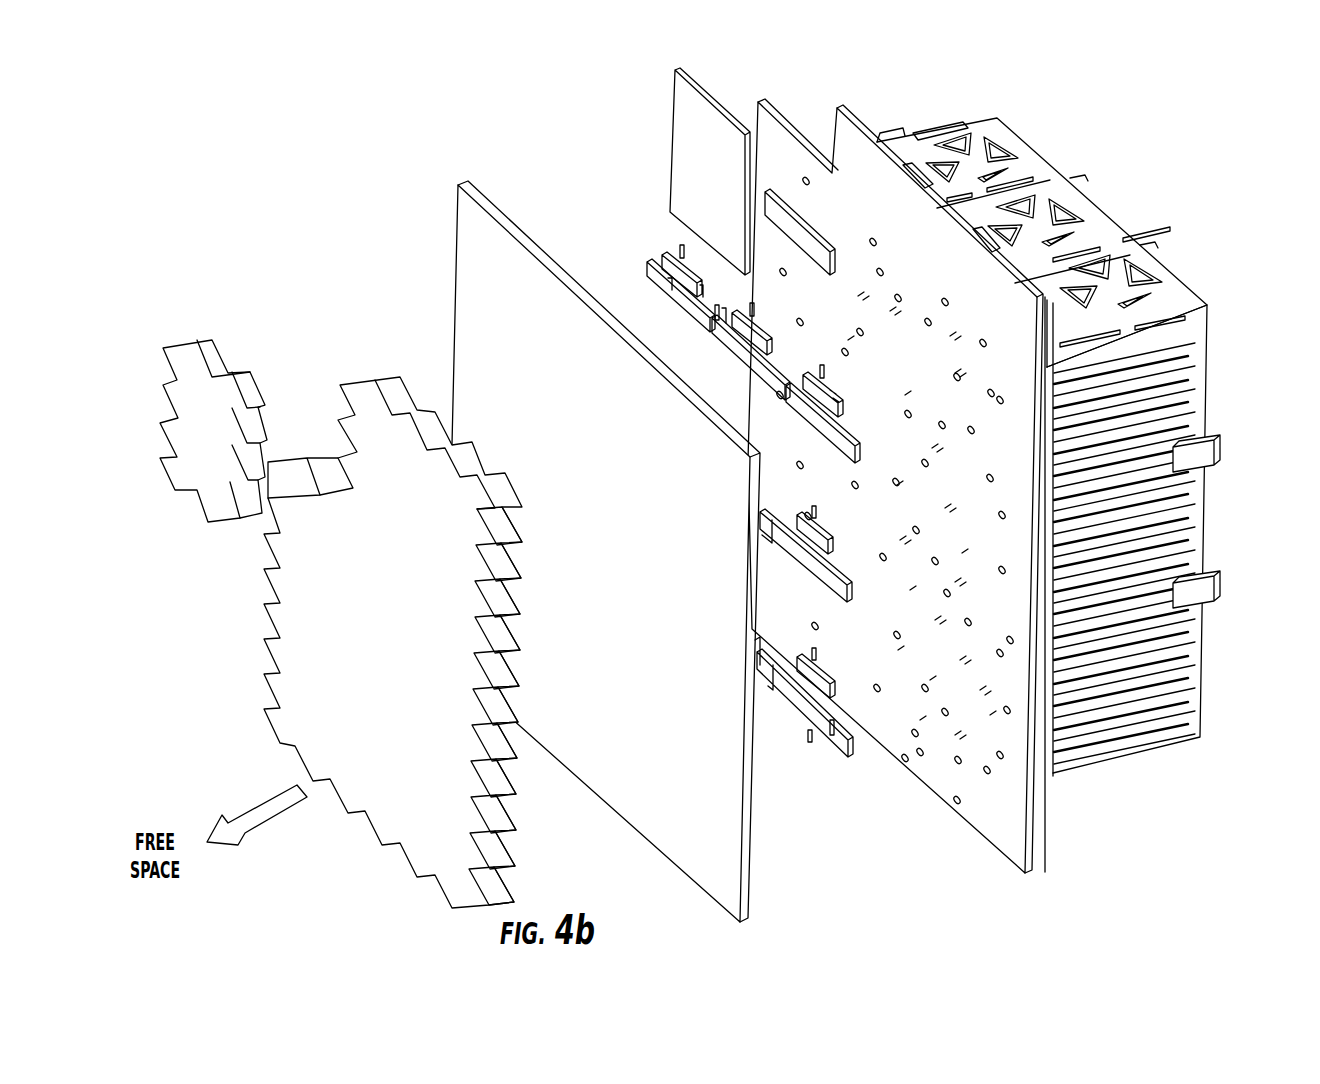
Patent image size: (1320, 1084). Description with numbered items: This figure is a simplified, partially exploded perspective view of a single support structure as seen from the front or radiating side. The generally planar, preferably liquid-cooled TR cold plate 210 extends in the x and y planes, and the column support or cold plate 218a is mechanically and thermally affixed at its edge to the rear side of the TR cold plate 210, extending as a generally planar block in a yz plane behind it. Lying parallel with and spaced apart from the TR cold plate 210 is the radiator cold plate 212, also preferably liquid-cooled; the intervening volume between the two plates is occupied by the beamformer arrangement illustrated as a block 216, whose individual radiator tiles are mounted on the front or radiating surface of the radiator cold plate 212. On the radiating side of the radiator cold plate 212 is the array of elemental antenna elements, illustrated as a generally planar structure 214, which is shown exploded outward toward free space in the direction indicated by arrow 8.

The free space arrow 8 is at (254, 826).
The TR cold plate 210 is at (1038, 765).
The radiator cold plate 212 is at (752, 813).
The generally planar structure of elemental antenna elements 214 is at (642, 268).
The beamformer arrangement 216 is at (662, 132).
The column support or cold plate 218a is at (1204, 680).